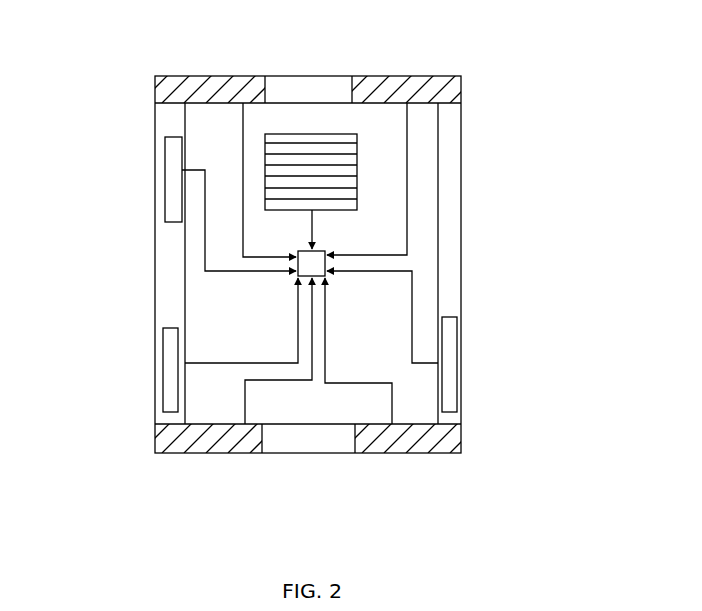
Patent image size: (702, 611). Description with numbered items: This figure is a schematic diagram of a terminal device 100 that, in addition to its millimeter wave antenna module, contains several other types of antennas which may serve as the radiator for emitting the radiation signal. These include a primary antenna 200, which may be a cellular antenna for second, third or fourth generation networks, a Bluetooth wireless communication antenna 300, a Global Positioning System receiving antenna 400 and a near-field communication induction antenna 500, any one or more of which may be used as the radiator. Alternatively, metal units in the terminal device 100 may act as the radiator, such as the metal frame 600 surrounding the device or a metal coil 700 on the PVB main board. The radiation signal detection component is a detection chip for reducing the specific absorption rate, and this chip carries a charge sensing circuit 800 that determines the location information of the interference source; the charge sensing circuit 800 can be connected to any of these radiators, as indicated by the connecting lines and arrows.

The terminal device 100 is at (316, 461).
The primary antenna 200 is at (202, 453).
The Bluetooth wireless communication antenna 300 is at (168, 183).
The Global Positioning System (GPS) receiving antenna 400 is at (156, 96).
The near-field communication induction antenna 500 is at (357, 173).
The metal frame 600 is at (155, 285).
The metal coil 700 is at (168, 358).
The charge sensing circuit 800 is at (325, 265).